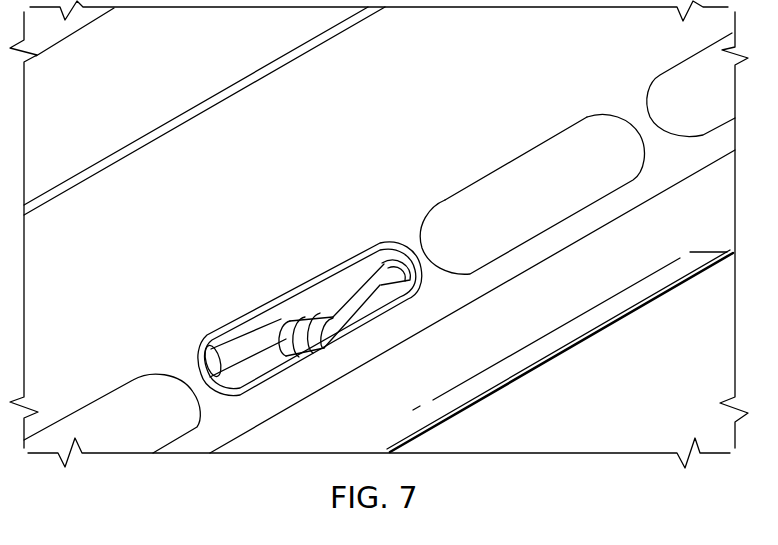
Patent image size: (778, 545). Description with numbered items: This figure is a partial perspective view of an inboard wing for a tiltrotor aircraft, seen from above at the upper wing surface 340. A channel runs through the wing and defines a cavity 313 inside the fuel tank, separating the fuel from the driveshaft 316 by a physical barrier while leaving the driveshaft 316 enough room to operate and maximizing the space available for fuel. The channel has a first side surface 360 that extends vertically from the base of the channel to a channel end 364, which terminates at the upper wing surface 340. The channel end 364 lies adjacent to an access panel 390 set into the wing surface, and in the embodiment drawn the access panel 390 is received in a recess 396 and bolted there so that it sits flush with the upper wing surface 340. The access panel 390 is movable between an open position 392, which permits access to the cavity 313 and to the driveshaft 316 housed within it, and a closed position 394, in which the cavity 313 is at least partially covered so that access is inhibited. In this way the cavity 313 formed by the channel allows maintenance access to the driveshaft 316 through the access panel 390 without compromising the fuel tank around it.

The upper wing surface 340 is at (222, 132).
The access panel 390 is at (510, 175).
The closed position 394 is at (548, 126).
The channel end 364 is at (371, 246).
The open position 392 is at (289, 270).
The cavity 313 is at (239, 347).
The driveshaft 316 is at (206, 360).
The first side surface 360 is at (279, 317).
The recess 396 is at (350, 270).